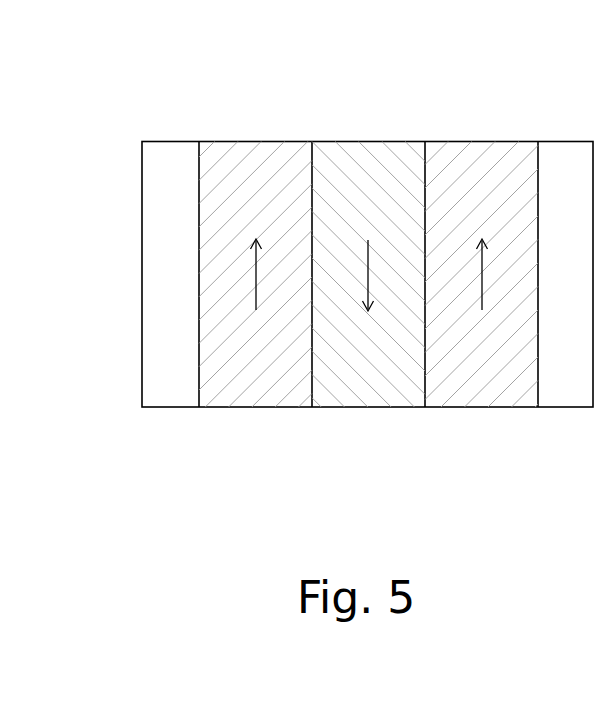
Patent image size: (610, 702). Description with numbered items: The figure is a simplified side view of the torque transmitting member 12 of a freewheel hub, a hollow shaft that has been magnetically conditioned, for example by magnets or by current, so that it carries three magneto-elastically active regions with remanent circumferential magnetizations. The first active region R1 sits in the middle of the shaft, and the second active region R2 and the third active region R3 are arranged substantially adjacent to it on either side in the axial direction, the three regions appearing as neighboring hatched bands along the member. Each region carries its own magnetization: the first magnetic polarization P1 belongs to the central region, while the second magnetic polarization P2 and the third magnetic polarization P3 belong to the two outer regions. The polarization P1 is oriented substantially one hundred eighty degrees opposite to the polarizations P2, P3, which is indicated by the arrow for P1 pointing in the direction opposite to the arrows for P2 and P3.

The torque transmitting member 12 is at (457, 142).
The first active region R1 is at (355, 142).
The second active region R2 is at (460, 395).
The third active region R3 is at (230, 395).
The first magnetic polarization P1 is at (368, 283).
The second magnetic polarization P2 is at (482, 283).
The third magnetic polarization P3 is at (256, 283).